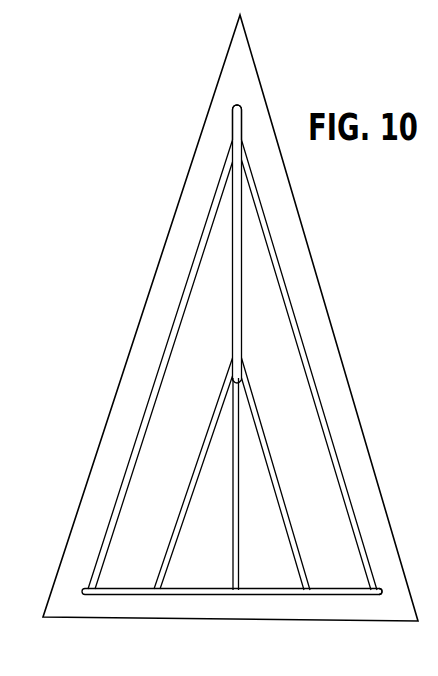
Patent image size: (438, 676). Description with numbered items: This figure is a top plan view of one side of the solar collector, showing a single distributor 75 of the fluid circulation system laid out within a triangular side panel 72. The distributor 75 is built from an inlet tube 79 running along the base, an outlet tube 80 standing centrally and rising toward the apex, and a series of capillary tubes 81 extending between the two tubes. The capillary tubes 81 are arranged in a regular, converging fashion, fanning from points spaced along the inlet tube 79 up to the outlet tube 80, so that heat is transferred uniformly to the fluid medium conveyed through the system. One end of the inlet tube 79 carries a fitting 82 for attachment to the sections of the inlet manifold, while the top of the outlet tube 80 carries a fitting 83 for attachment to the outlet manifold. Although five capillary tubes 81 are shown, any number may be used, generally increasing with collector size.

The triangular panel 72 is at (312, 249).
The distributor 75 is at (295, 317).
The inlet tube 79 is at (290, 596).
The outlet tube 80 is at (242, 253).
The capillary tubes 81 is at (334, 458).
The fitting 82 is at (384, 594).
The fitting 83 is at (243, 107).